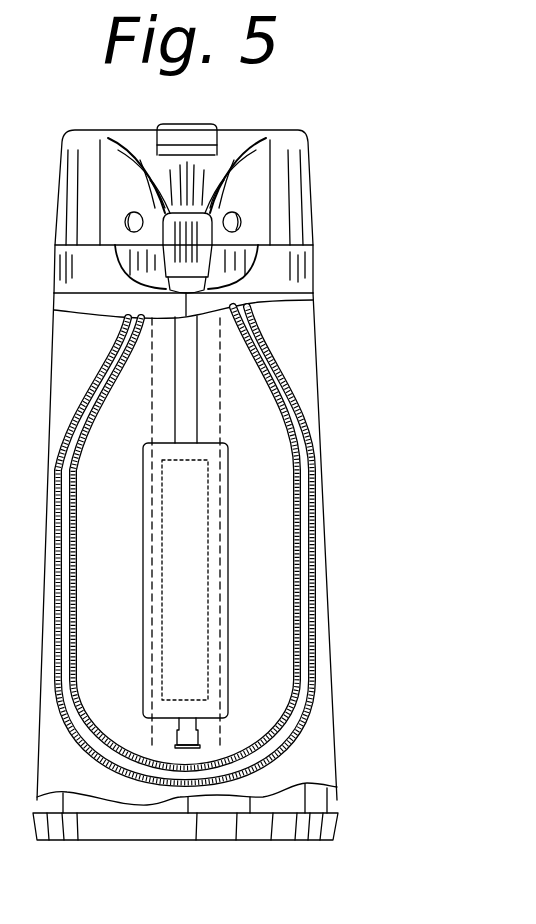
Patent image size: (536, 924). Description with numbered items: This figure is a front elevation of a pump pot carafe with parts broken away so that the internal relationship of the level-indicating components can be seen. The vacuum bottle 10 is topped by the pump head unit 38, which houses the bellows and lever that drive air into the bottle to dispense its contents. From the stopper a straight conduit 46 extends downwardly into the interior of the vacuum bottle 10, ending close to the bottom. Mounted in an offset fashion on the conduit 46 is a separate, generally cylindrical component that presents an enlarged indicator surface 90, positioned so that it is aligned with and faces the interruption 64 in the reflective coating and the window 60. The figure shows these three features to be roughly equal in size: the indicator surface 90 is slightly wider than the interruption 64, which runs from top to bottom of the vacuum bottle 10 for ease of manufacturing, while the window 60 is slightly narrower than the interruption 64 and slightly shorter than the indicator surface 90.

The vacuum bottle 10 is at (278, 363).
The pump head unit 38 is at (296, 181).
The conduit 46 is at (183, 408).
The window 60 is at (225, 500).
The interruption 64 is at (222, 464).
The indicator surface 90 is at (230, 573).